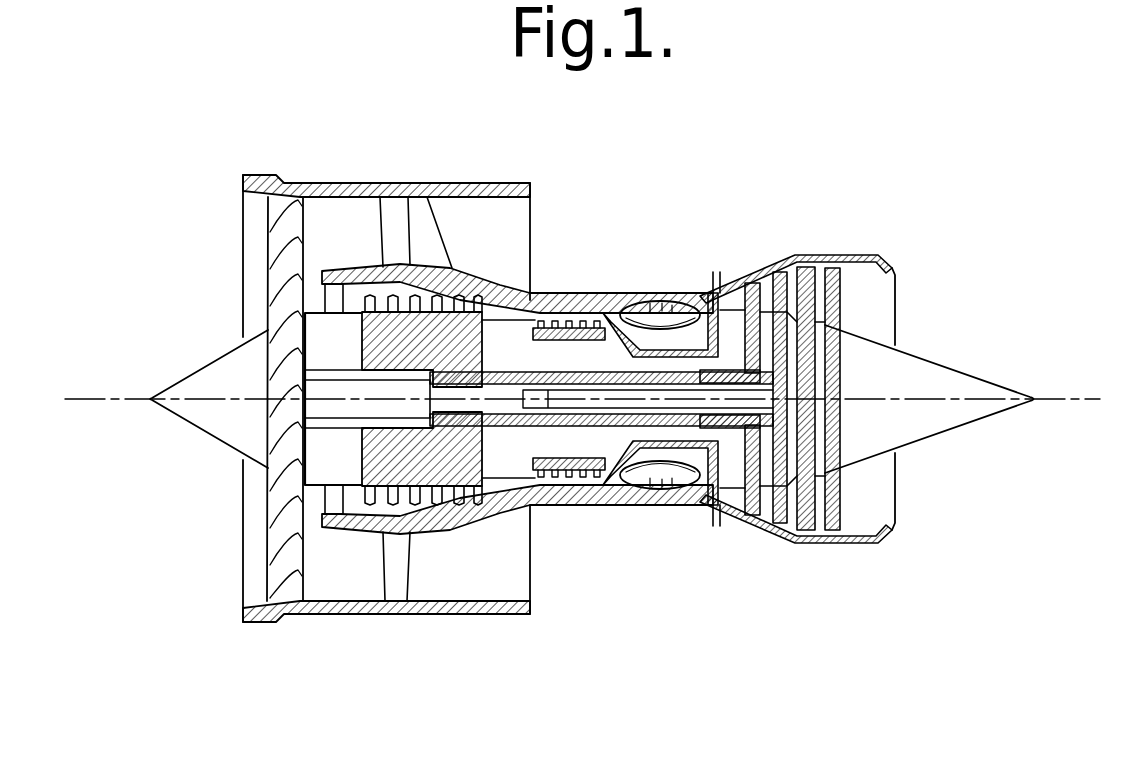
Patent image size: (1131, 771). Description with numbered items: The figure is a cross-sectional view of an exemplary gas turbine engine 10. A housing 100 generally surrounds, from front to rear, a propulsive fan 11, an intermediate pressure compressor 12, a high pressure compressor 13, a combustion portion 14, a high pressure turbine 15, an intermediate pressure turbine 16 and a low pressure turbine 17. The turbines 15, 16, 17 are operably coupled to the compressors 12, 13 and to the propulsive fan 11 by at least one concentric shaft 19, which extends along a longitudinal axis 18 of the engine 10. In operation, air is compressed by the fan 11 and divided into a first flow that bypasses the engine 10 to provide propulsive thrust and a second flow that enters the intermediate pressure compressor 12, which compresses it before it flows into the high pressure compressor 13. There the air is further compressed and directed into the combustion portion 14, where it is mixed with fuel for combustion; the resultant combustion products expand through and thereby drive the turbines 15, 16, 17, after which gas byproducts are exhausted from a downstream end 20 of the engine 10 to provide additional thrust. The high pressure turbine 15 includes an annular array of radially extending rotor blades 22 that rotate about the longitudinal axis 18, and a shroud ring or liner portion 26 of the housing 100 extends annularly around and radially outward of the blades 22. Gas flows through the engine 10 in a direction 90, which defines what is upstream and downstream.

The gas turbine engine 10 is at (656, 179).
The propulsive fan 11 is at (282, 248).
The intermediate pressure compressor 12 is at (428, 197).
The high pressure compressor 13 is at (590, 297).
The combustion portion 14 is at (664, 297).
The high pressure turbine 15 is at (716, 503).
The intermediate pressure turbine 16 is at (749, 283).
The low pressure turbine 17 is at (808, 268).
The longitudinal axis 18 is at (1058, 399).
The concentric shaft 19 is at (607, 427).
The downstream end 20 is at (896, 252).
The rotor blades 22 is at (723, 472).
The liner portion 26 is at (721, 270).
The direction of gas flow 90 is at (222, 491).
The housing 100 is at (548, 630).